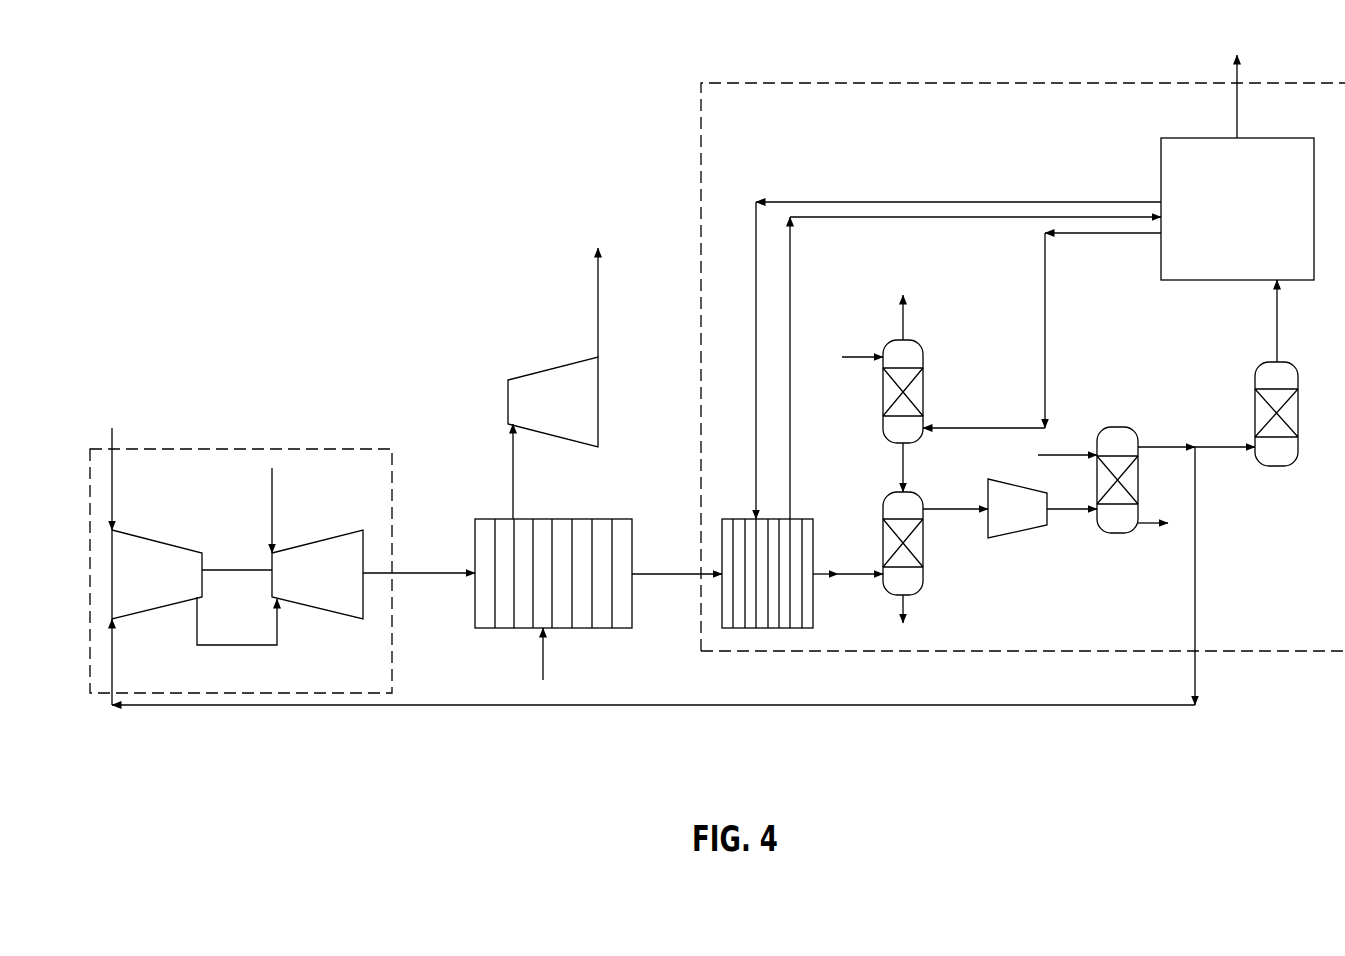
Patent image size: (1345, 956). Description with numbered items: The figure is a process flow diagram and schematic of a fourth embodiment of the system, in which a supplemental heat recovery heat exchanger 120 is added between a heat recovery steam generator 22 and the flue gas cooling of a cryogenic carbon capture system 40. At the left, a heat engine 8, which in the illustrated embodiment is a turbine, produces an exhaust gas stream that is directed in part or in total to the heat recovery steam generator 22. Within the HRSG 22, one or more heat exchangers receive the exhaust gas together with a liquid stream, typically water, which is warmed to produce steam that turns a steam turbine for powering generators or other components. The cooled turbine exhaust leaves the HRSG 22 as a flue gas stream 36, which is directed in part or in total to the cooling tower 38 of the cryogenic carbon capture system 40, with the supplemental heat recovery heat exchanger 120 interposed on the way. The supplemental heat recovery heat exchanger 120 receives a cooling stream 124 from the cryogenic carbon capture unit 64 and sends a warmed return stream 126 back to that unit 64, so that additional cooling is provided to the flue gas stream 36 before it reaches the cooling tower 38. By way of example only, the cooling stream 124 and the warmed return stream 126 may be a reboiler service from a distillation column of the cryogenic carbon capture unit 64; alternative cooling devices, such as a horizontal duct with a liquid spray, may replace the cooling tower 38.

The heat engine 8 is at (347, 448).
The heat recovery steam generator 22 is at (572, 630).
The flue gas stream 36 is at (677, 575).
The cooling tower 38 is at (883, 507).
The cryogenic carbon capture system 40 is at (765, 83).
The cryogenic carbon capture unit 64 is at (1220, 138).
The supplemental heat recovery heat exchanger 120 is at (767, 631).
The cooling stream 124 is at (756, 340).
The warmed return stream 126 is at (790, 258).